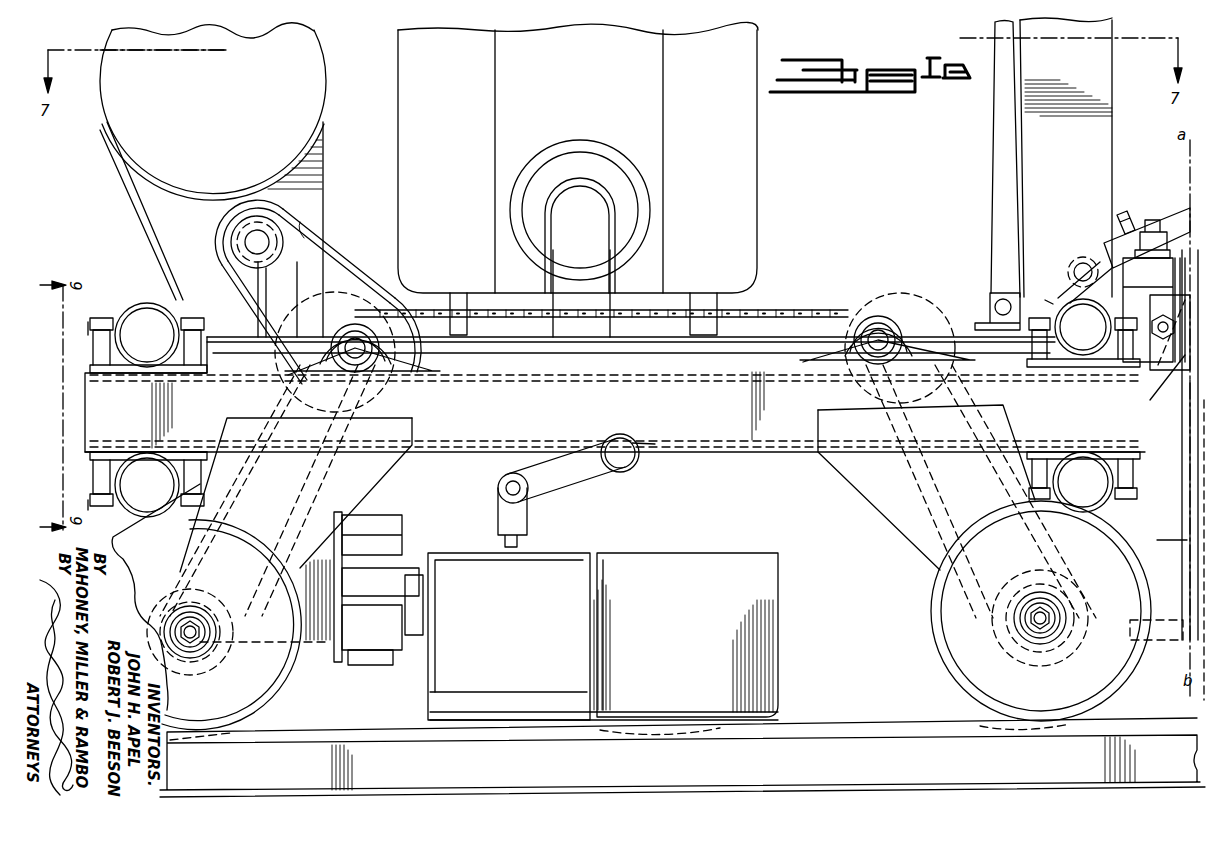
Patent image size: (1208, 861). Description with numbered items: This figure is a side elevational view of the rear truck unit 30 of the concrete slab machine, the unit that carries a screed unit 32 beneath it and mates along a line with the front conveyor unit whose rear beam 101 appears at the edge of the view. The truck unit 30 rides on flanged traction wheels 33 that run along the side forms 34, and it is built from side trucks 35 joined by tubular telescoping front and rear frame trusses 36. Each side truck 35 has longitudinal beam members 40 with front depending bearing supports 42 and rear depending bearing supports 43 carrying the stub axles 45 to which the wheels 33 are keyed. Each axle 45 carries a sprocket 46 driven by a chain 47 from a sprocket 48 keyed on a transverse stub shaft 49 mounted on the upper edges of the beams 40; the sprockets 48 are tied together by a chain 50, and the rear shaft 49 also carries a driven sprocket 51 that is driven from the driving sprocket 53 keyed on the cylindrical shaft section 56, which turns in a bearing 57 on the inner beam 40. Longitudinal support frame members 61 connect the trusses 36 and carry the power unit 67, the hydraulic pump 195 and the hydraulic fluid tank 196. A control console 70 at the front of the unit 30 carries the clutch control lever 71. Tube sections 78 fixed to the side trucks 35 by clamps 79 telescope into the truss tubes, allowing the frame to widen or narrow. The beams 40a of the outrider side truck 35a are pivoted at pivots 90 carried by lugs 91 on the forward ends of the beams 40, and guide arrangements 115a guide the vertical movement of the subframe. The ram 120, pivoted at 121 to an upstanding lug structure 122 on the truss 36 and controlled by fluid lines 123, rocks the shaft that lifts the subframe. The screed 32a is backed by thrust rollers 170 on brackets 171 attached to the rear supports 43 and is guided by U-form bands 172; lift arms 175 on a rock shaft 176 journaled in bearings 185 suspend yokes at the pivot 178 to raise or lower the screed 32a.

The rear main frame unit or truck unit 30 is at (895, 270).
The screed unit 32 is at (785, 598).
The screed 32a is at (492, 705).
The flanged truck or traction wheels 33 is at (292, 686).
The side forms 34 is at (341, 723).
The side trucks 35 is at (728, 450).
The outrider side truck 35a is at (1158, 367).
The front and rear frame trusses 36 is at (143, 298).
The beam members 40 is at (615, 394).
The beams of outrider side truck 40a is at (1168, 298).
The front depending bearing supports 42 is at (883, 512).
The rear depending bearing supports 43 is at (388, 460).
The axles 45 is at (200, 640).
The sprocket 46 is at (232, 596).
The chain 47 is at (392, 478).
The sprocket 48 is at (372, 378).
The transverse stub shaft 49 is at (356, 336).
The chain 50 is at (783, 308).
The driven sprocket 51 is at (350, 268).
The driving sprocket 53 is at (300, 250).
The outer cylindrical section 56 is at (250, 238).
The bearing 57 is at (222, 295).
The longitudinally extending support frame members 61 is at (585, 365).
The power unit 67 is at (757, 150).
The control console 70 is at (1066, 157).
The clutch control lever 71 is at (1000, 168).
The pipe or tube sections 78 is at (166, 330).
The clamps 79 is at (90, 324).
The pivots 90 is at (1150, 327).
The lugs 91 is at (1150, 413).
The rear truss or beam 101 is at (1193, 640).
The guide arrangements 115a is at (1180, 396).
The ram 120 is at (1177, 216).
The pivot 121 is at (1080, 263).
The upstanding lug structure 122 is at (1070, 288).
The fluid lines 123 is at (1127, 216).
The thrust rollers 170 is at (375, 665).
The brackets 171 is at (352, 662).
The U-form bands 172 is at (410, 612).
The lift arms 175 is at (590, 480).
The rock shaft 176 is at (633, 466).
The pivot 178 is at (525, 493).
The bearings 185 is at (655, 445).
The hydraulic pump 195 is at (556, 176).
The tank 196 is at (317, 75).